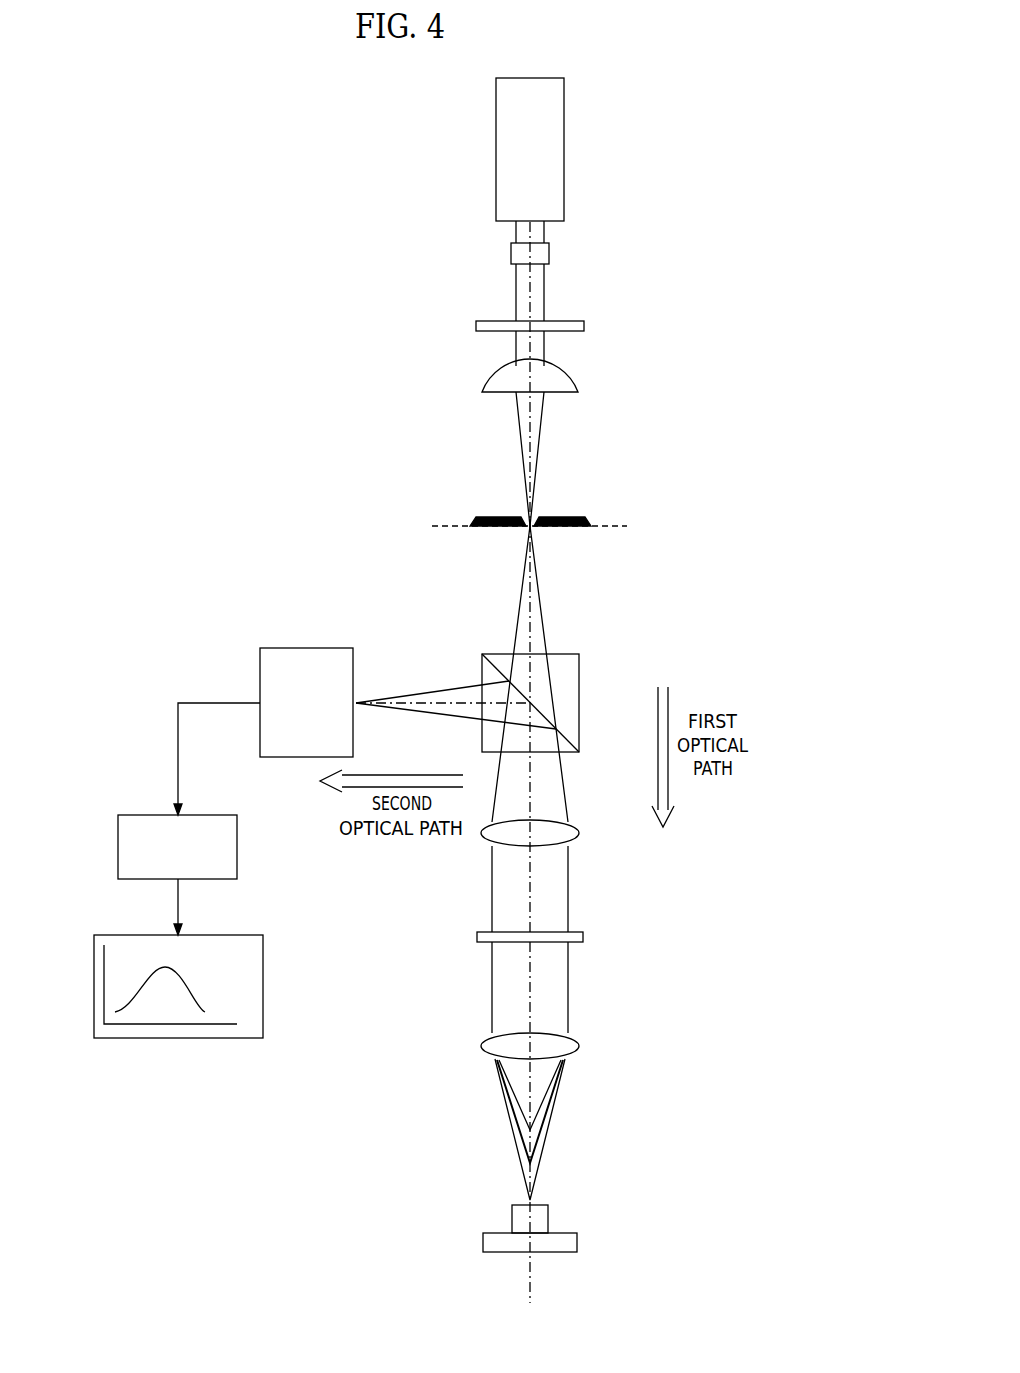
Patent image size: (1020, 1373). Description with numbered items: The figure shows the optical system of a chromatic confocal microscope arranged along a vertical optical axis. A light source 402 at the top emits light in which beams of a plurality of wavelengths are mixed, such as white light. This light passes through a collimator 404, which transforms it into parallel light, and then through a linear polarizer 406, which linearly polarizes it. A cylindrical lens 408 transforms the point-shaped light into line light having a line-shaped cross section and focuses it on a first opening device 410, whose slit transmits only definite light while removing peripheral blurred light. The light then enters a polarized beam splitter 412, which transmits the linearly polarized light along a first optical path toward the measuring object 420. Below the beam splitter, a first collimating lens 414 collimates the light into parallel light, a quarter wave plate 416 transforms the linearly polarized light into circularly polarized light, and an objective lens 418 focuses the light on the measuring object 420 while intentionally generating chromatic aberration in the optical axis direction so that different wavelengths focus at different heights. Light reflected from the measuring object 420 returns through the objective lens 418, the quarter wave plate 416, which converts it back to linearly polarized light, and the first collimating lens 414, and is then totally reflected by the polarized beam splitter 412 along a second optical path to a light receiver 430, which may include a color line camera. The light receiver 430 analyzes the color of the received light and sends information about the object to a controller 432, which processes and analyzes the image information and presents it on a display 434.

The light source 402 is at (564, 148).
The collimator 404 is at (549, 252).
The linear polarizer 406 is at (584, 326).
The cylindrical lens 408 is at (577, 382).
The first opening device 410 is at (565, 517).
The polarized beam splitter 412 is at (579, 702).
The first collimating lens 414 is at (579, 833).
The quarter wave plate 416 is at (583, 937).
The objective lens 418 is at (579, 1046).
The measuring object 420 is at (577, 1243).
The light receiver 430 is at (303, 648).
The controller 432 is at (118, 843).
The display 434 is at (176, 1038).